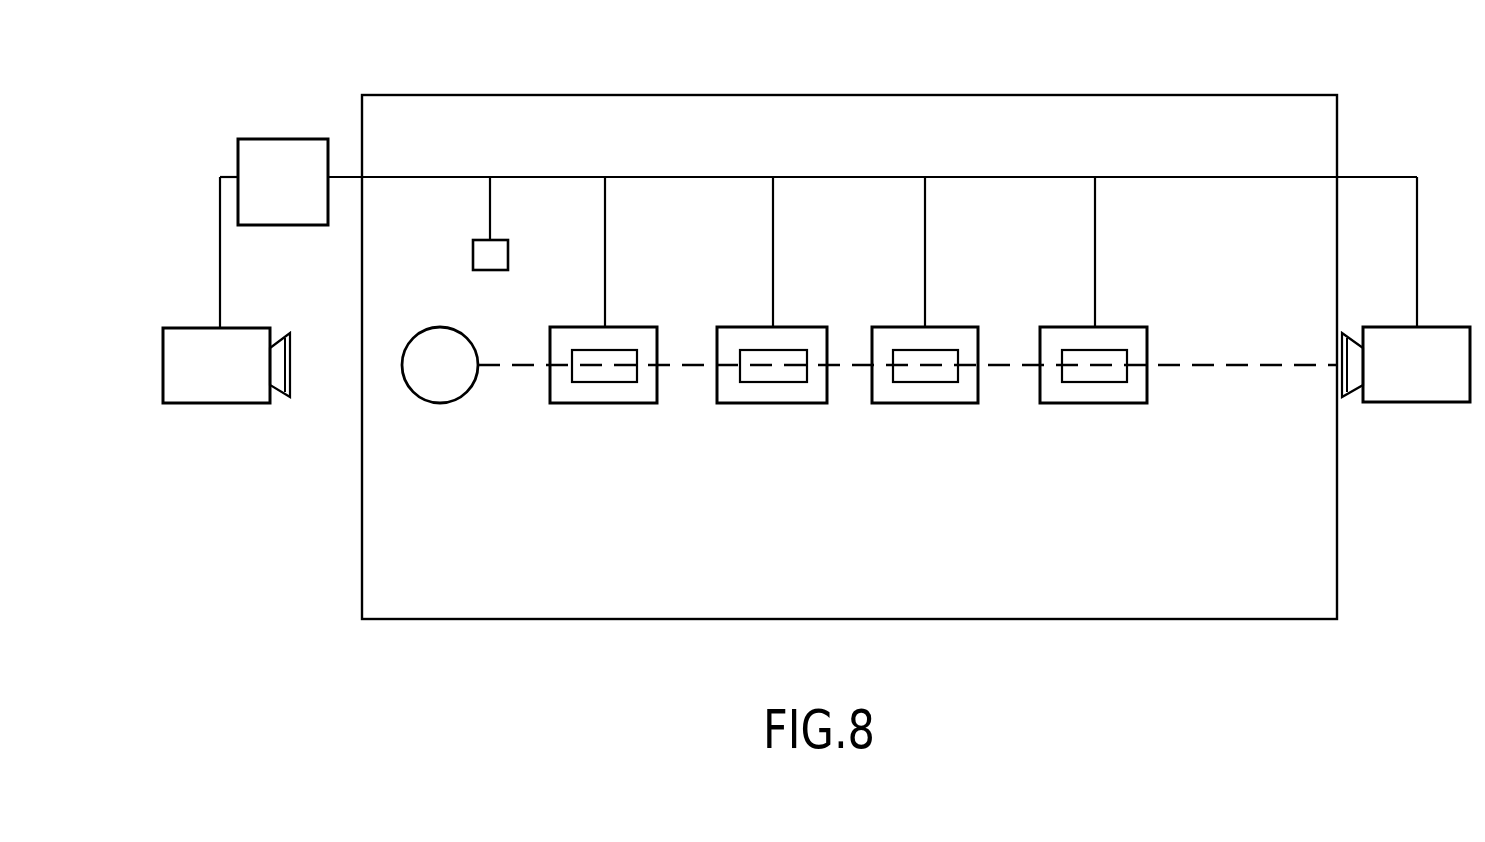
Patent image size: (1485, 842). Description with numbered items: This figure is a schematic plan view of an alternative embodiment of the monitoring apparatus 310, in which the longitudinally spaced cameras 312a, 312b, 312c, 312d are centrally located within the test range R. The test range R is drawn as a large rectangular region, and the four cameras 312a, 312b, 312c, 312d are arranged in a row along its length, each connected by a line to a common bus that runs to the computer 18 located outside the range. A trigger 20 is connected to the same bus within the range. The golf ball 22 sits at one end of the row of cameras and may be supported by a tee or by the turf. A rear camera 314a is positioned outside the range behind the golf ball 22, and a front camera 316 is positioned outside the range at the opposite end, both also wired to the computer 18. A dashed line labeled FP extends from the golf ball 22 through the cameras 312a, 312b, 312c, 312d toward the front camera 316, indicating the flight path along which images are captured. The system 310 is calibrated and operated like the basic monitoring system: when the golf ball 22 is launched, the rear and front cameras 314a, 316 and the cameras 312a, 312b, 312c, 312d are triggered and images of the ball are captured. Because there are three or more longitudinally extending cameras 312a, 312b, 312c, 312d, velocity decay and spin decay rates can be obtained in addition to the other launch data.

The computer 18 is at (265, 139).
The trigger 20 is at (508, 258).
The golf ball 22 is at (452, 403).
The apparatus 310 is at (849, 369).
The longitudinally spaced camera 312a is at (590, 403).
The longitudinally spaced camera 312b is at (783, 403).
The longitudinally spaced camera 312c is at (917, 403).
The longitudinally spaced camera 312d is at (1095, 403).
The rear camera 314a is at (205, 403).
The front camera 316 is at (1428, 402).
The focal plane FP is at (750, 362).
The test range R is at (655, 619).